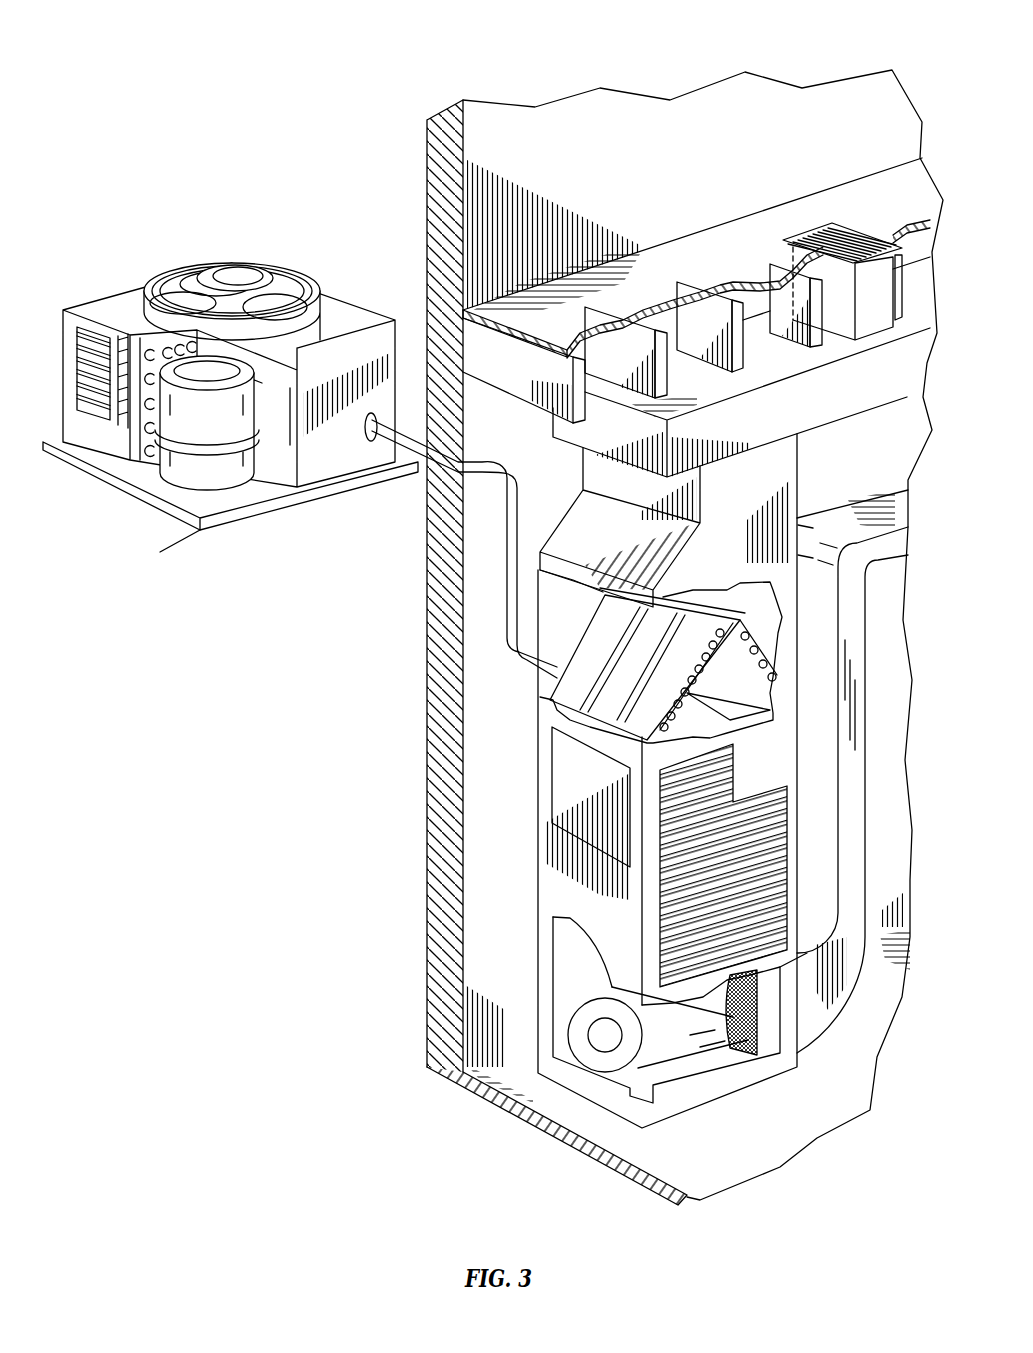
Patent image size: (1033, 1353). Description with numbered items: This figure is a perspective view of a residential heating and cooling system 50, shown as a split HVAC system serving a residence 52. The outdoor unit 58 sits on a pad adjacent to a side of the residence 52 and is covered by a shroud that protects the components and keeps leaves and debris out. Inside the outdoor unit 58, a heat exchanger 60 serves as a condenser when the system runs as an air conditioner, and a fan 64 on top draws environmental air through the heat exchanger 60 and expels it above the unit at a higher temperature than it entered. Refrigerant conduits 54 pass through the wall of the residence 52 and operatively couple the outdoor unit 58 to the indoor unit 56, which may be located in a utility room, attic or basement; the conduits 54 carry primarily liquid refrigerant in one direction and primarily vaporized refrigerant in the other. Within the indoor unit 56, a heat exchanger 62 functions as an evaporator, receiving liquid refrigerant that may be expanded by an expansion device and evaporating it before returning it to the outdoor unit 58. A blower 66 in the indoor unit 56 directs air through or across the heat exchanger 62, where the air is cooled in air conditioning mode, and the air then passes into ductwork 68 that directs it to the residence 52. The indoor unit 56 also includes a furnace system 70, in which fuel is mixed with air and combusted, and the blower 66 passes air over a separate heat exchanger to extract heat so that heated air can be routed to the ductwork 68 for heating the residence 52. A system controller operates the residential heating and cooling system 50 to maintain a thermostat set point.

The residential heating and cooling system 50 is at (350, 44).
The residence 52 is at (590, 105).
The refrigerant conduits 54 is at (505, 515).
The indoor unit 56 is at (523, 830).
The outdoor unit 58 is at (176, 257).
The heat exchanger 60 is at (152, 350).
The heat exchanger 62 is at (607, 690).
The fan 64 is at (258, 270).
The blower 66 is at (597, 1055).
The ductwork 68 is at (905, 335).
The furnace system 70 is at (555, 765).